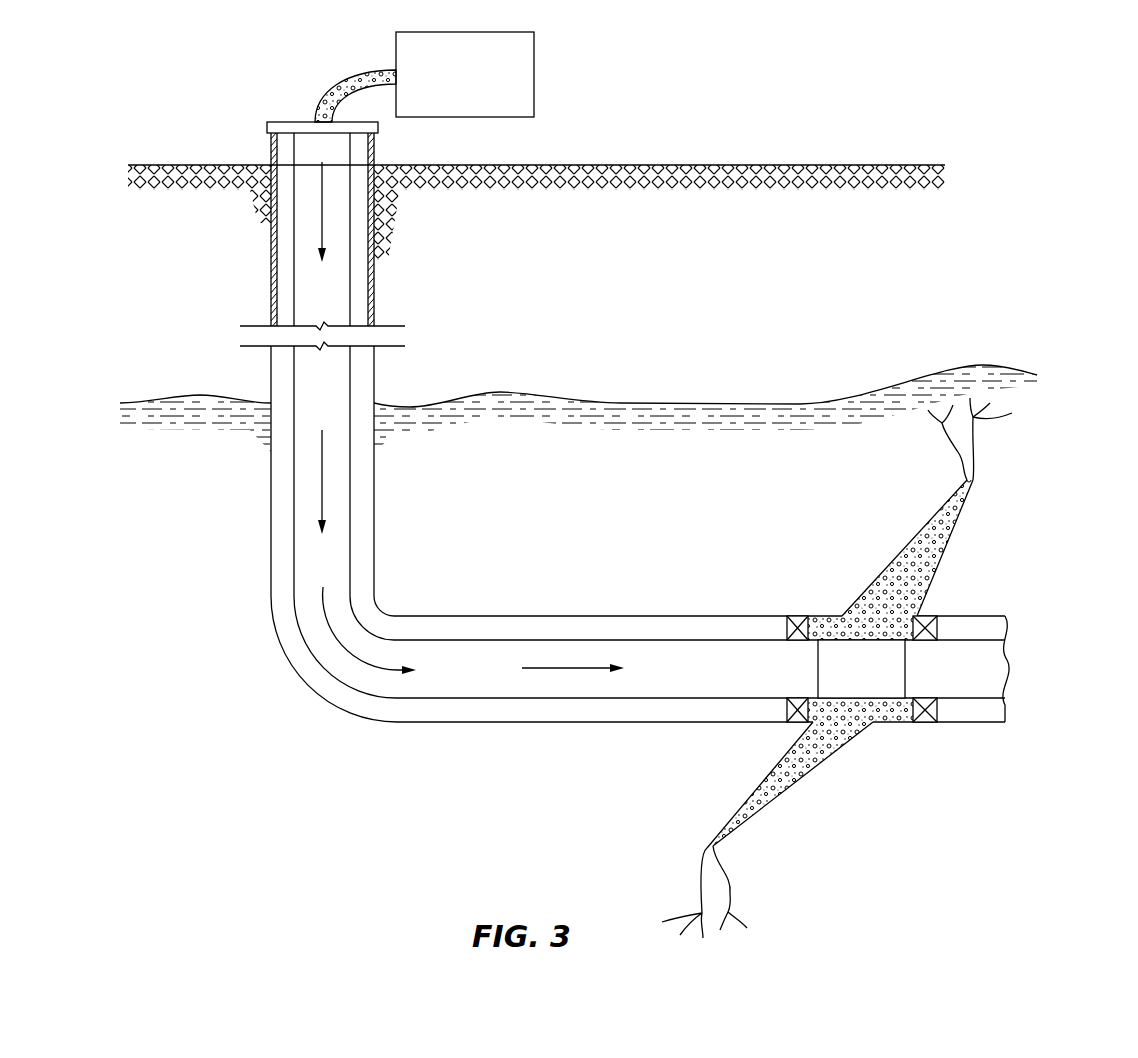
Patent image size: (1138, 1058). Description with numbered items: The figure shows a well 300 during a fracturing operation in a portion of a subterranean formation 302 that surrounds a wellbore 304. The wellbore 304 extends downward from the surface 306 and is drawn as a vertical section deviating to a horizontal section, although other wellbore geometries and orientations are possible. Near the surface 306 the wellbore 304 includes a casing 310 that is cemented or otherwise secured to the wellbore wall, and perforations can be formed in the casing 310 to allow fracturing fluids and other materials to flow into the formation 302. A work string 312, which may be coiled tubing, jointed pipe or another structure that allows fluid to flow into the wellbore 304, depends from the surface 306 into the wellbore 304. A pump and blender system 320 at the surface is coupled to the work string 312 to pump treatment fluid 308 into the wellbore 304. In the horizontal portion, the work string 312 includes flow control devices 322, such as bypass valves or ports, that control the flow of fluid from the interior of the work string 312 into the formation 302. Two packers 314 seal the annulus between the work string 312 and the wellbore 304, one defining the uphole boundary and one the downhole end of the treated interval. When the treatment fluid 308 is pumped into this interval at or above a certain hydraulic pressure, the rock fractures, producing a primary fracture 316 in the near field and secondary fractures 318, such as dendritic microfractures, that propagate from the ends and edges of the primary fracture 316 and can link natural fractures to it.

The well 300 is at (280, 676).
The subterranean formation 302 is at (591, 470).
The wellbore 304 is at (283, 235).
The surface 306 is at (797, 165).
The treatment fluid 308 is at (347, 78).
The casing 310 is at (271, 278).
The work string 312 is at (295, 537).
The packers 314 is at (797, 615).
The primary fracture 316 is at (880, 548).
The secondary fractures 318 is at (1000, 448).
The pump and blender system 320 is at (486, 86).
The flow control devices 322 is at (884, 680).